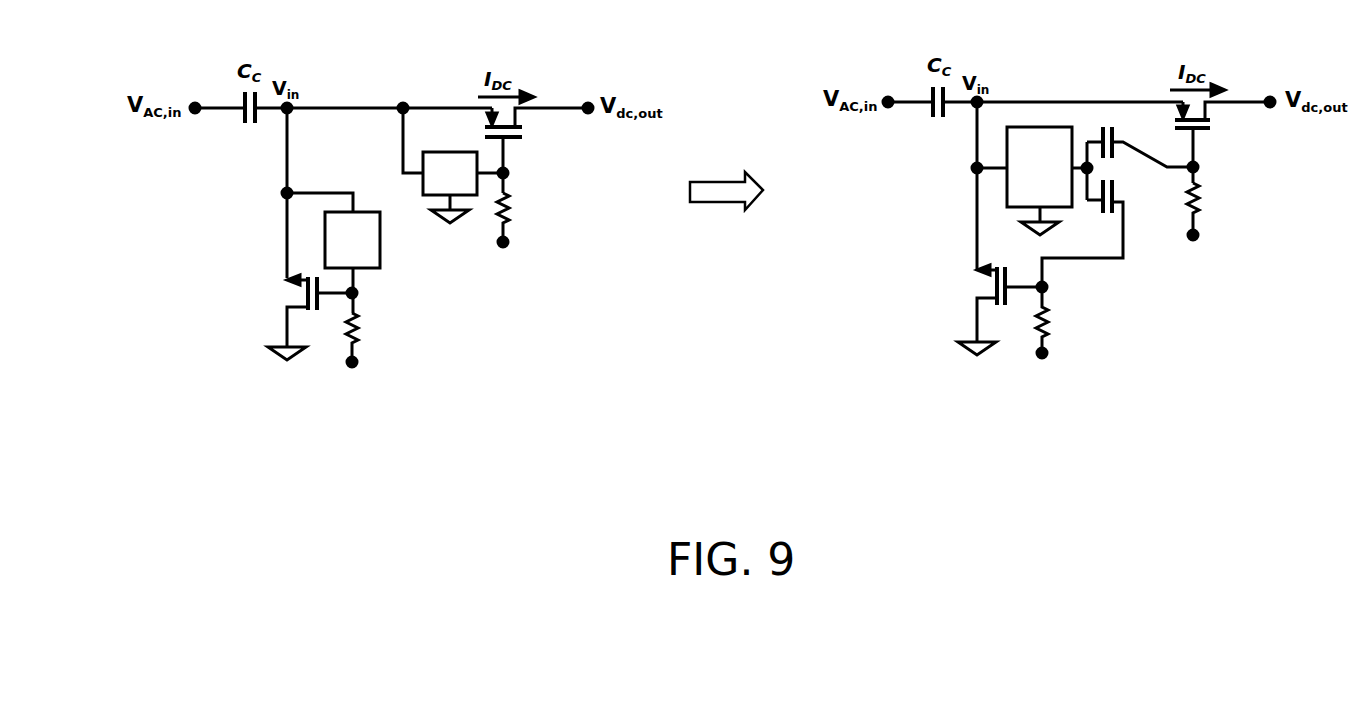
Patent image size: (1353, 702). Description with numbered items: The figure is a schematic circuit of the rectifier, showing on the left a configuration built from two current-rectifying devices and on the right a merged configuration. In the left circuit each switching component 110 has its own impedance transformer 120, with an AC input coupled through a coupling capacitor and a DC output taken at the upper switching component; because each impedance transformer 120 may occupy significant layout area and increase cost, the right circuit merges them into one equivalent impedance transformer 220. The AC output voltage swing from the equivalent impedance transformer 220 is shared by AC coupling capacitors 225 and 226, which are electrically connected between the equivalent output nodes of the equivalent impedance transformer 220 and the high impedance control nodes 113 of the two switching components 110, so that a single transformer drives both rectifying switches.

The switching component 110 is at (752, 232).
The impedance transformer 120 is at (401, 210).
The equivalent impedance transformer 220 is at (1049, 181).
The AC coupling capacitor 225 is at (1140, 138).
The AC coupling capacitor 226 is at (1103, 228).
The high impedance control node 113 is at (1131, 221).